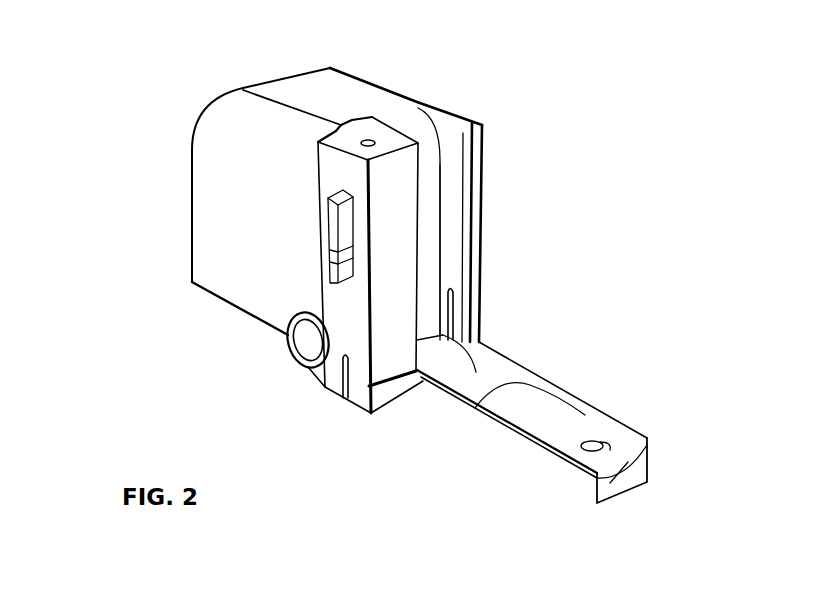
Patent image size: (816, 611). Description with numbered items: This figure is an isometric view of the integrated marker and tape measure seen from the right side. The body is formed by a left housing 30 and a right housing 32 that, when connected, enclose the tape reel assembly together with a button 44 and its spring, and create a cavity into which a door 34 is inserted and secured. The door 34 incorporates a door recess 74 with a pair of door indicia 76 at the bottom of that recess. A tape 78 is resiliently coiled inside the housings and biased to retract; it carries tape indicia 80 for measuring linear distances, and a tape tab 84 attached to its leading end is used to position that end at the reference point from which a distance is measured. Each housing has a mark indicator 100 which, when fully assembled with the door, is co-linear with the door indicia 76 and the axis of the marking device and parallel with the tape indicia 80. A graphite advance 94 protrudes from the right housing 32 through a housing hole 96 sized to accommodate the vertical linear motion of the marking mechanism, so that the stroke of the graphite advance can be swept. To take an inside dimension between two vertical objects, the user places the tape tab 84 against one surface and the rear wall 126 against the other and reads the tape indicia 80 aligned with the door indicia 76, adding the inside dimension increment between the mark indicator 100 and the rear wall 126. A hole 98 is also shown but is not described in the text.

The left housing 30 is at (330, 82).
The right housing 32 is at (262, 205).
The door 34 is at (410, 123).
The button 44 is at (305, 367).
The door recess 74 is at (455, 220).
The door indicia 76 is at (455, 325).
The tape 78 is at (530, 402).
The tape indicia 80 is at (588, 415).
The tape tab 84 is at (613, 482).
The graphite advance 94 is at (327, 235).
The housing hole 96 is at (327, 273).
The hole 98 is at (368, 140).
The mark indicator 100 is at (343, 398).
The rear wall 126 is at (190, 230).